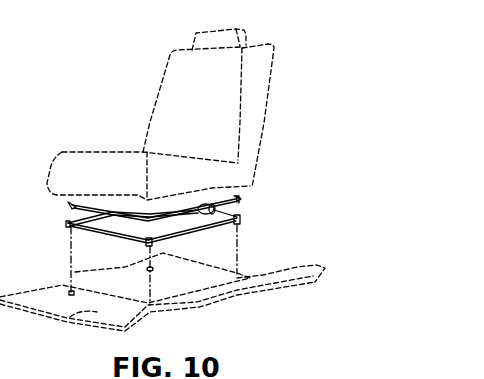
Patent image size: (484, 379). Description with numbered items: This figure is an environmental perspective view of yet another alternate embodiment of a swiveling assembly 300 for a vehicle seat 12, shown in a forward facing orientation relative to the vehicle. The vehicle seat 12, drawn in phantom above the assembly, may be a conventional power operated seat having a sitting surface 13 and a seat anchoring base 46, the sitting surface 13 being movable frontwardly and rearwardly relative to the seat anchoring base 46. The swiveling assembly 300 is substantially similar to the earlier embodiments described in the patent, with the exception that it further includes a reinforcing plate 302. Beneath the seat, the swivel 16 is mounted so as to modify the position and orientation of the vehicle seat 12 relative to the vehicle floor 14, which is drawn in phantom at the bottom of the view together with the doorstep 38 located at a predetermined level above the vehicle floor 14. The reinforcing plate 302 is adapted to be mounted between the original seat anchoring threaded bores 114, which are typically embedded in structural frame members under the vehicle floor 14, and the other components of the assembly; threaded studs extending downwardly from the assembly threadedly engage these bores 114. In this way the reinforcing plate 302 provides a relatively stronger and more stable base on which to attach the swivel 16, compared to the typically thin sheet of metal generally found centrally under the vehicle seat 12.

The swiveling assembly 300 is at (74, 119).
The vehicle seat 12 is at (266, 121).
The sitting surface 13 is at (130, 150).
The seat anchoring base 46 is at (254, 187).
The reinforcing plate 302 is at (246, 217).
The swivel 16 is at (142, 224).
The original seat anchoring threaded bore 114 is at (64, 276).
The vehicle floor 14 is at (68, 318).
The doorstep 38 is at (321, 279).